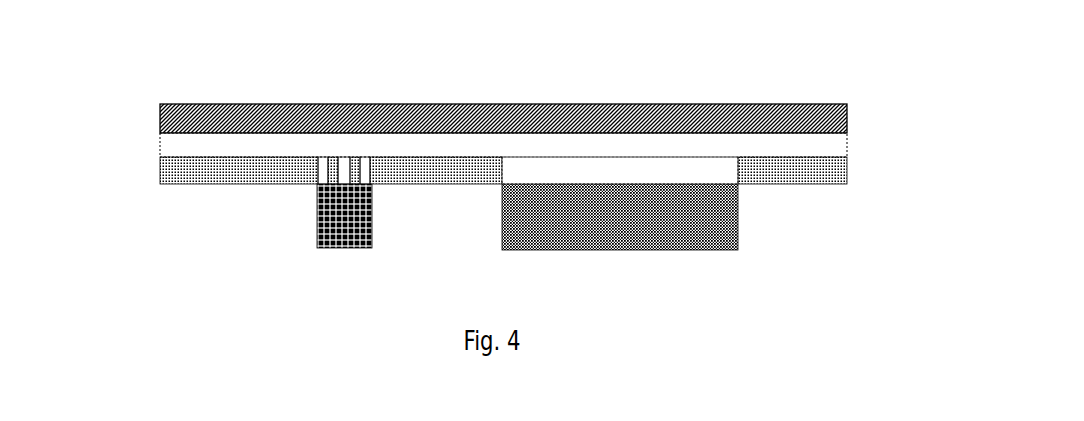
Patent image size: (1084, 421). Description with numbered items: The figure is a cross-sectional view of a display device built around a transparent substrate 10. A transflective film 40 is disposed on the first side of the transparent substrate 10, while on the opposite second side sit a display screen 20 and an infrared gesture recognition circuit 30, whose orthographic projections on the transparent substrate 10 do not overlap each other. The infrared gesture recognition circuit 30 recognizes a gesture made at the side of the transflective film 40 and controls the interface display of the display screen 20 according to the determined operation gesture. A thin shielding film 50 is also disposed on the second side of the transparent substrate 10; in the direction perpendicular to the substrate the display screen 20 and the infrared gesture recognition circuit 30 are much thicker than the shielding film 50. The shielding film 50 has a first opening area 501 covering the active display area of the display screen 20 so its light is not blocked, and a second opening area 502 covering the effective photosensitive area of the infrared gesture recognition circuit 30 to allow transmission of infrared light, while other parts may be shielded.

The transparent substrate 10 is at (847, 142).
The display screen 20 is at (738, 213).
The infrared gesture recognition circuit 30 is at (316, 213).
The transflective film 40 is at (847, 115).
The shielding film 50 is at (160, 170).
The first opening area 501 is at (550, 168).
The second opening area 502 is at (343, 165).